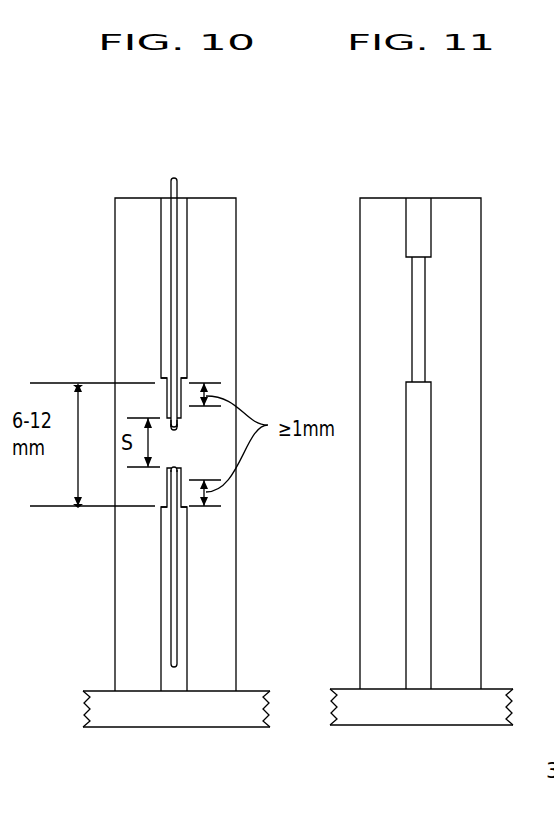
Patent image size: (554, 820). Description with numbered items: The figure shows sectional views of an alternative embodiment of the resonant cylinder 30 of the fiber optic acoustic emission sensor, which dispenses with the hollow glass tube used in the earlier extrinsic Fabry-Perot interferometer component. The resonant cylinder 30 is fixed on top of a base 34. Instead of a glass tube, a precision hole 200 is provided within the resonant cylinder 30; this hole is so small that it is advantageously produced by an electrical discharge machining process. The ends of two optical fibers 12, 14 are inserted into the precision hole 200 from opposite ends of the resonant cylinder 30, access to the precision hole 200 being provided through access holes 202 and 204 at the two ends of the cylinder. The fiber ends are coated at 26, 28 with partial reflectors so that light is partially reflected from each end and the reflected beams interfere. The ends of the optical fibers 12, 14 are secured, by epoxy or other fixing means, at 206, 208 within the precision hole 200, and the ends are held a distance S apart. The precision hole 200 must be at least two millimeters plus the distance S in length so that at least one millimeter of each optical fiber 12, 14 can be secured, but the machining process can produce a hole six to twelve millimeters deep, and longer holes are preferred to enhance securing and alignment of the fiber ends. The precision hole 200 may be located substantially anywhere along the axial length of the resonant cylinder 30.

In FIG. 10, the optical fiber 12 is at (176, 640).
In FIG. 10, the optical fiber 14 is at (174, 183).
In FIG. 10, the partial reflector coating 26 is at (174, 457).
In FIG. 10, the partial reflector coating 28 is at (168, 428).
In FIG. 10, the resonant cylinder 30 is at (223, 243).
In FIG. 11, the resonant cylinder 30 is at (467, 236).
In FIG. 10, the base 34 is at (121, 715).
In FIG. 11, the base 34 is at (370, 713).
In FIG. 10, the precision hole 200 is at (177, 441).
In FIG. 11, the precision hole 200 is at (420, 313).
In FIG. 10, the access hole 202 is at (182, 583).
In FIG. 11, the access hole 202 is at (420, 594).
In FIG. 10, the access hole 204 is at (178, 299).
In FIG. 11, the access hole 204 is at (412, 232).
In FIG. 10, the fiber fixing point 206 is at (163, 508).
In FIG. 10, the fiber fixing point 208 is at (162, 377).